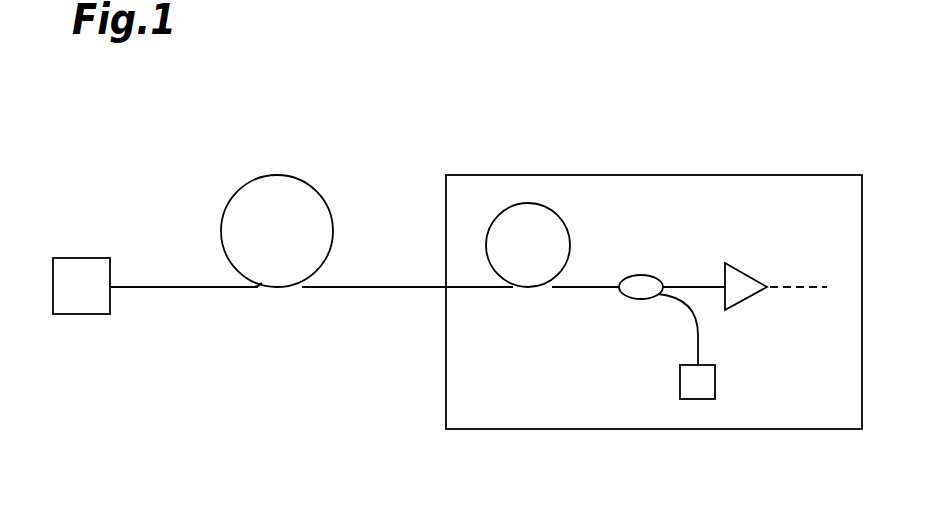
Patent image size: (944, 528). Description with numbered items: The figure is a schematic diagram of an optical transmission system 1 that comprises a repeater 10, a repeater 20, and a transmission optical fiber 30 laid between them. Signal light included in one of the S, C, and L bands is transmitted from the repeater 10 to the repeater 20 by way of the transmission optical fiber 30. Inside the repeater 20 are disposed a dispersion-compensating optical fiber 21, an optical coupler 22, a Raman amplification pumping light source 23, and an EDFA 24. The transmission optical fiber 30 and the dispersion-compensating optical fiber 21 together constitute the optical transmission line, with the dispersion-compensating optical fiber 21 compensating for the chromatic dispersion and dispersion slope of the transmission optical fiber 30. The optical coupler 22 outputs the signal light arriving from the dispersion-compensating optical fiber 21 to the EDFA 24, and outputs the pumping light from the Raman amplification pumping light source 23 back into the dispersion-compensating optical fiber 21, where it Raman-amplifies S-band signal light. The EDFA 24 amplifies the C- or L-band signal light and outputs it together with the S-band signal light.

The optical transmission system 1 is at (393, 155).
The repeater 10 is at (83, 315).
The repeater 20 is at (445, 372).
The dispersion-compensating optical fiber 21 is at (562, 217).
The optical coupler 22 is at (643, 274).
The Raman amplification pumping light source 23 is at (680, 383).
The EDFA 24 is at (743, 272).
The transmission optical fiber 30 is at (238, 193).